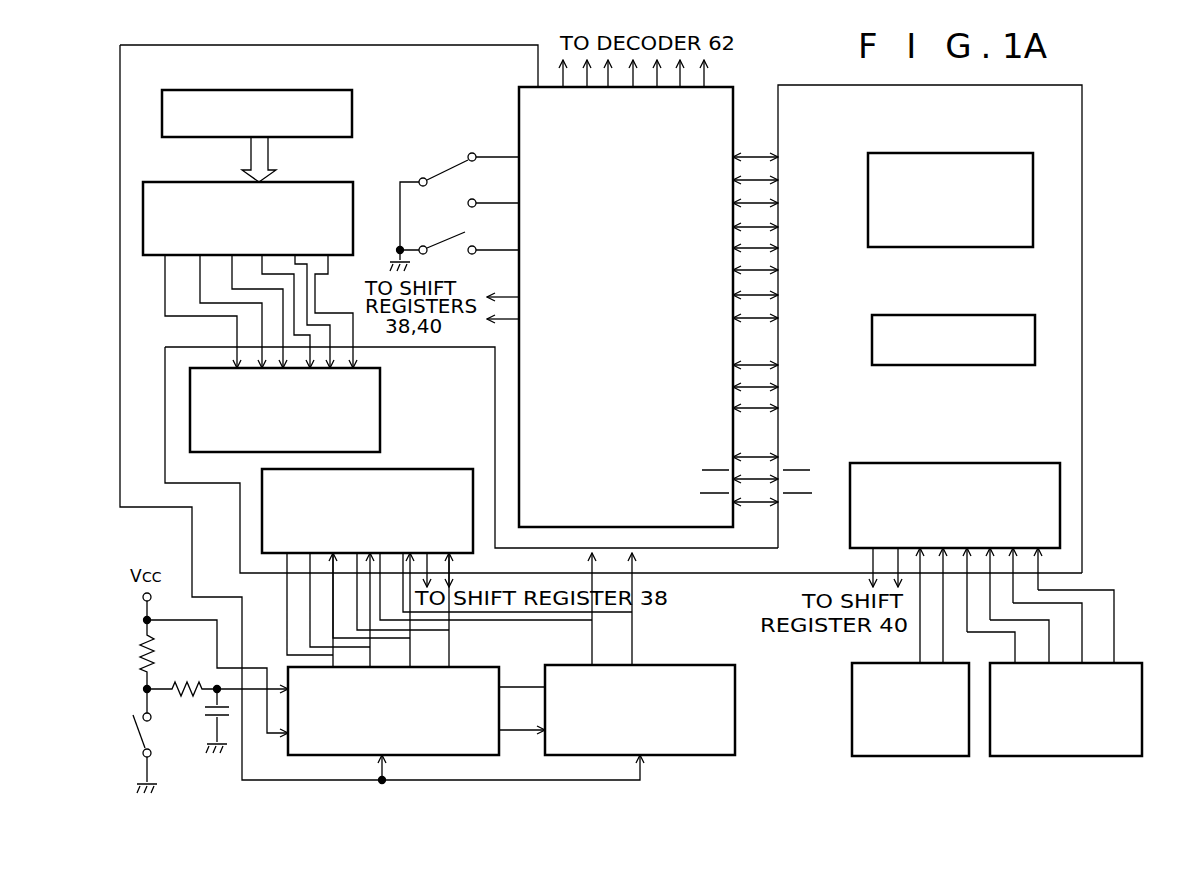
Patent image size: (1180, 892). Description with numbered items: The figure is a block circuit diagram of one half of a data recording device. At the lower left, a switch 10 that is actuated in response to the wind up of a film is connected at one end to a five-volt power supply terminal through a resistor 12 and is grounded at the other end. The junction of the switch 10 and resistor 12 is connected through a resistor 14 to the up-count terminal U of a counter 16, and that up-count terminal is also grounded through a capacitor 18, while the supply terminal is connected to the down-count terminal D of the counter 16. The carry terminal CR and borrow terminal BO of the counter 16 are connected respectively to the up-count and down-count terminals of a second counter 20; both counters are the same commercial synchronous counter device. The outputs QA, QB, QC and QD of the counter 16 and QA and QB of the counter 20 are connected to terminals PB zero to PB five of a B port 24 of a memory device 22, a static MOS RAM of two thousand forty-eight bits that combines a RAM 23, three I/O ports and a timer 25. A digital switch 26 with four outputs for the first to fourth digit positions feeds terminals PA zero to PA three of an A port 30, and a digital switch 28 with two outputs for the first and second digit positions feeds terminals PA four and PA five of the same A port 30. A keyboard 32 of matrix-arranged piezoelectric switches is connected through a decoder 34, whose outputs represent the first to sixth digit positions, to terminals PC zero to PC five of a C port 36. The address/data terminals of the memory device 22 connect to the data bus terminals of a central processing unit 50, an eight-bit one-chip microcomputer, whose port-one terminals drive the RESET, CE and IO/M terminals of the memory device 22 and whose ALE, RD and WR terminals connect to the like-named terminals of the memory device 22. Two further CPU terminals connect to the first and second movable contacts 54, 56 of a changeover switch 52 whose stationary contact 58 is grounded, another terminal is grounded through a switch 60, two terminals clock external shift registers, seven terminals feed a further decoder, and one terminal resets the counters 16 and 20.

The switch 10 is at (142, 740).
The resistor 12 is at (144, 653).
The resistor 14 is at (190, 683).
The counter 16 is at (487, 667).
The capacitor 18 is at (205, 730).
The counter 20 is at (695, 663).
The memory device 22 is at (820, 82).
The RAM 23 is at (948, 153).
The B port 24 is at (440, 469).
The timer 25 is at (961, 315).
The digital switch 26 is at (1130, 716).
The digital switch 28 is at (852, 699).
The A port 30 is at (989, 463).
The keyboard 32 is at (255, 90).
The decoder 34 is at (333, 182).
The C port 36 is at (380, 410).
The central processing unit 50 is at (722, 87).
The changeover switch 52 is at (448, 170).
The first movable contact 54 is at (489, 145).
The second movable contact 56 is at (489, 192).
The stationary contact 58 is at (427, 194).
The switch 60 is at (442, 242).